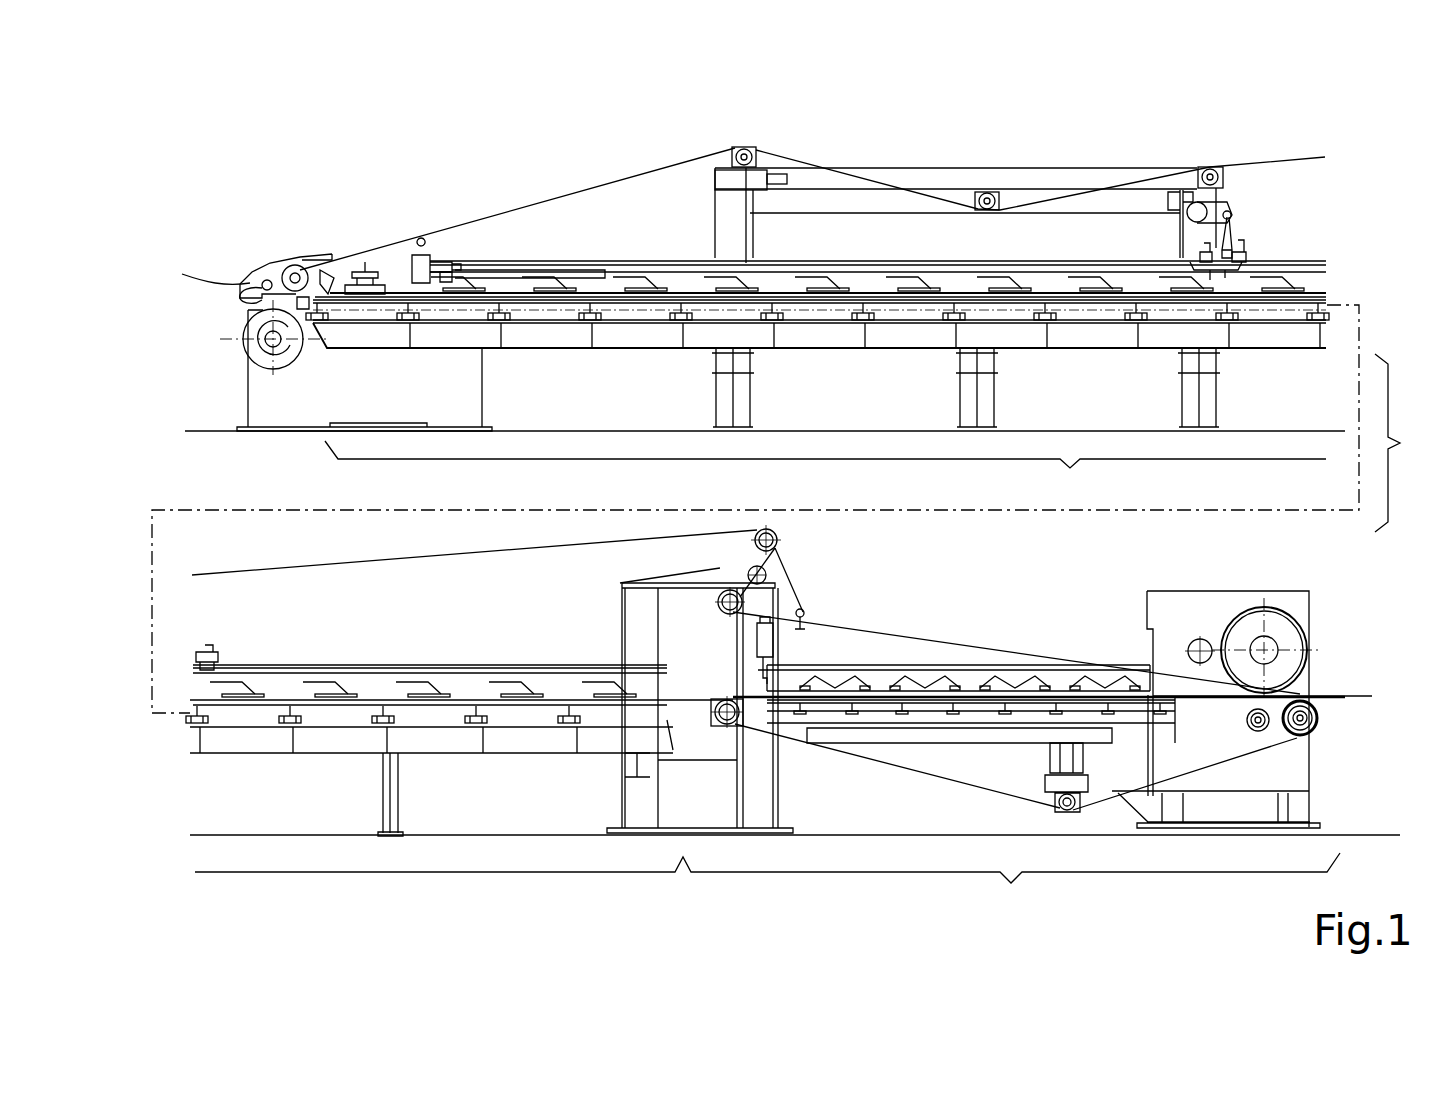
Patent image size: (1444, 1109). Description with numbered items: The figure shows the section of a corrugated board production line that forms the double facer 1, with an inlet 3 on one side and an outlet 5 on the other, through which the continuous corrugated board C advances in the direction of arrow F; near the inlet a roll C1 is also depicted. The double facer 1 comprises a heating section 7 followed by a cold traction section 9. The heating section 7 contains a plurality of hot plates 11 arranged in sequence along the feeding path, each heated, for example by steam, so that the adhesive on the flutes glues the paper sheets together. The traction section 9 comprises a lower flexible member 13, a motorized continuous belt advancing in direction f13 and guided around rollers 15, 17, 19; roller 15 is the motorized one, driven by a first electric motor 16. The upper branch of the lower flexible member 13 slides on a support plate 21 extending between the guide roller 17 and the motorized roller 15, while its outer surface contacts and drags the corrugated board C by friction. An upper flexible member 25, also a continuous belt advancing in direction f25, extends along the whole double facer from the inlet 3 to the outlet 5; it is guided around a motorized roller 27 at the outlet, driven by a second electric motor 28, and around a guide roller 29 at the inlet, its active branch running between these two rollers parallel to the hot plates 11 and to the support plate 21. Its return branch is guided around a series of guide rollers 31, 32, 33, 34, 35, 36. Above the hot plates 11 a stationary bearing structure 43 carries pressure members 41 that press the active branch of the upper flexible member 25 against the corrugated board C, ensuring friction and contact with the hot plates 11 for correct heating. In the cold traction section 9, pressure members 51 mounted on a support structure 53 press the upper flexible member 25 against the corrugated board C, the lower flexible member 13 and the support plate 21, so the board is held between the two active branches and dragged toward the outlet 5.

The double facer 1 is at (1401, 443).
The inlet 3 is at (248, 284).
The outlet 5 is at (1319, 689).
The heating section 7 is at (1072, 493).
The cold traction section 9 is at (1013, 901).
The hot plates 11 is at (358, 310).
The lower flexible member 13 is at (898, 773).
The motorized roller 15 is at (1319, 723).
The first electric motor 16 is at (1302, 738).
The guide roller 17 is at (716, 718).
The roller 19 is at (1071, 815).
The support plate 21 is at (994, 707).
The upper flexible member 25 is at (1145, 172).
The motorized roller 27 is at (1247, 643).
The second electric motor 28 is at (1269, 648).
The guide roller 29 is at (294, 266).
The guide roller 31 is at (1191, 645).
The guide roller 32 is at (720, 596).
The guide roller 33 is at (778, 538).
The guide roller 34 is at (1198, 203).
The guide roller 35 is at (985, 192).
The guide roller 36 is at (744, 148).
The pressure members 41 is at (556, 284).
The stationary bearing structure 43 is at (636, 274).
The pressure members 51 is at (803, 685).
The support structure 53 is at (916, 670).
The corrugated board C is at (1362, 694).
The sheet roll C1 is at (268, 308).
The direction of advancement F is at (968, 124).
The direction of advancement of the upper flexible member f25 is at (647, 165).
The direction of advancement of the lower flexible member f13 is at (1243, 705).